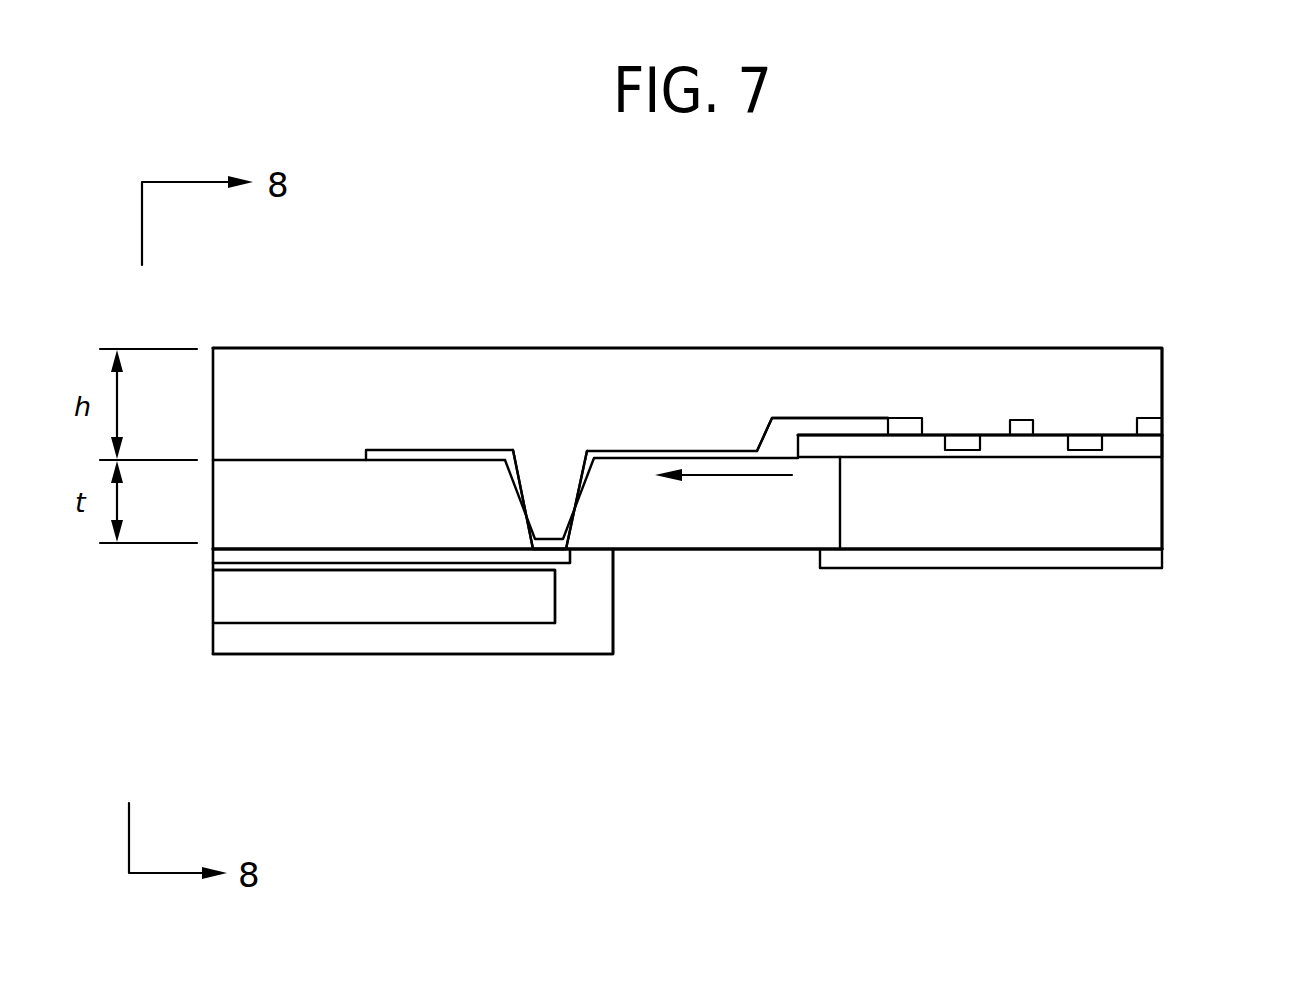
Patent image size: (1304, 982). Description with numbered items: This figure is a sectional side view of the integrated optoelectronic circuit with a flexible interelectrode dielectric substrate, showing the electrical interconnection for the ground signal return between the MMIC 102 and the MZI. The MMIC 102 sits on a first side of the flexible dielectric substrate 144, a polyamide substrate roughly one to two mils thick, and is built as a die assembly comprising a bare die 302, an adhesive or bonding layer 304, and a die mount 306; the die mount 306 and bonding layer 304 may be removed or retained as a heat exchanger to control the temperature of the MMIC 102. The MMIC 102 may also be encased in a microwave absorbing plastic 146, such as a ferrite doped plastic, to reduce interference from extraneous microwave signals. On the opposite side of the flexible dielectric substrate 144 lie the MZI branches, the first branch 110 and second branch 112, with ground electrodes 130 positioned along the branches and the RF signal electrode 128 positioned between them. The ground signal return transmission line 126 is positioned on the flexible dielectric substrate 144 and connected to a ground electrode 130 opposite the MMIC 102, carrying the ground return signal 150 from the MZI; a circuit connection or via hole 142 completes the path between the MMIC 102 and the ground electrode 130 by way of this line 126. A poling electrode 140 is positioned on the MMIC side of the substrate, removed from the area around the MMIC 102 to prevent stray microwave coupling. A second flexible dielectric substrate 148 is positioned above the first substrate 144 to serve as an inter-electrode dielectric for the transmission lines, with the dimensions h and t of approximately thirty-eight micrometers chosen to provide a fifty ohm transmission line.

The monolithic microwave integrated circuit (MMIC) 102 is at (505, 795).
The first branch 110 is at (975, 447).
The second branch 112 is at (1085, 432).
The ground signal return transmission line 126 is at (793, 420).
The RF (signal) electrode 128 is at (1020, 422).
The ground electrode 130 is at (905, 422).
The poling electrode 140 is at (1023, 561).
The circuit connection (via hole) 142 is at (545, 510).
The flexible dielectric substrate 144 is at (437, 472).
The microwave absorbing plastic 146 is at (580, 640).
The second flexible dielectric substrate 148 is at (445, 390).
The ground return signal 150 is at (735, 476).
The bare die 302 is at (225, 557).
The adhesive (bonding layer) 304 is at (220, 566).
The die mount 306 is at (235, 600).